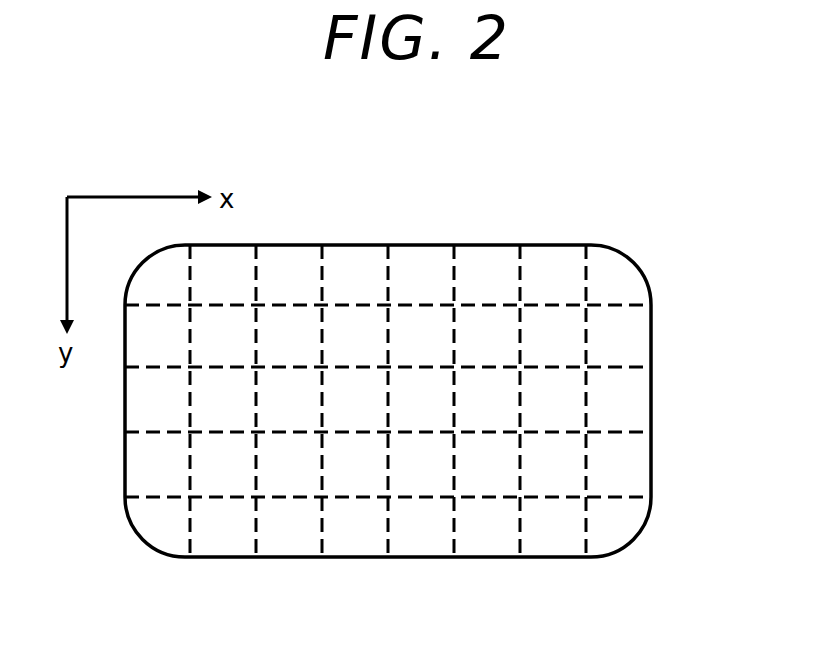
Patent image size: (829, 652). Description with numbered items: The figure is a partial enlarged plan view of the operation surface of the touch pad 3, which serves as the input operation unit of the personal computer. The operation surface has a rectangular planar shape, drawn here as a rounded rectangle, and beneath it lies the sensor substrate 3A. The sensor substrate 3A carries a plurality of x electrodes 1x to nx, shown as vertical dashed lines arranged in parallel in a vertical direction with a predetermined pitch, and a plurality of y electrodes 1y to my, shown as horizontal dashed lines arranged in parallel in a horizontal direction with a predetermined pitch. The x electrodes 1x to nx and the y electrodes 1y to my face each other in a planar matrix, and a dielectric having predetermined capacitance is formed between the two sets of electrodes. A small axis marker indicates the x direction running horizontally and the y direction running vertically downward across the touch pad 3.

The touch pad 3 is at (651, 400).
The sensor substrate 3A is at (388, 236).
The y electrode 1y is at (683, 275).
The y electrode my is at (686, 526).
The x electrode 1x is at (178, 583).
The x electrode nx is at (595, 583).